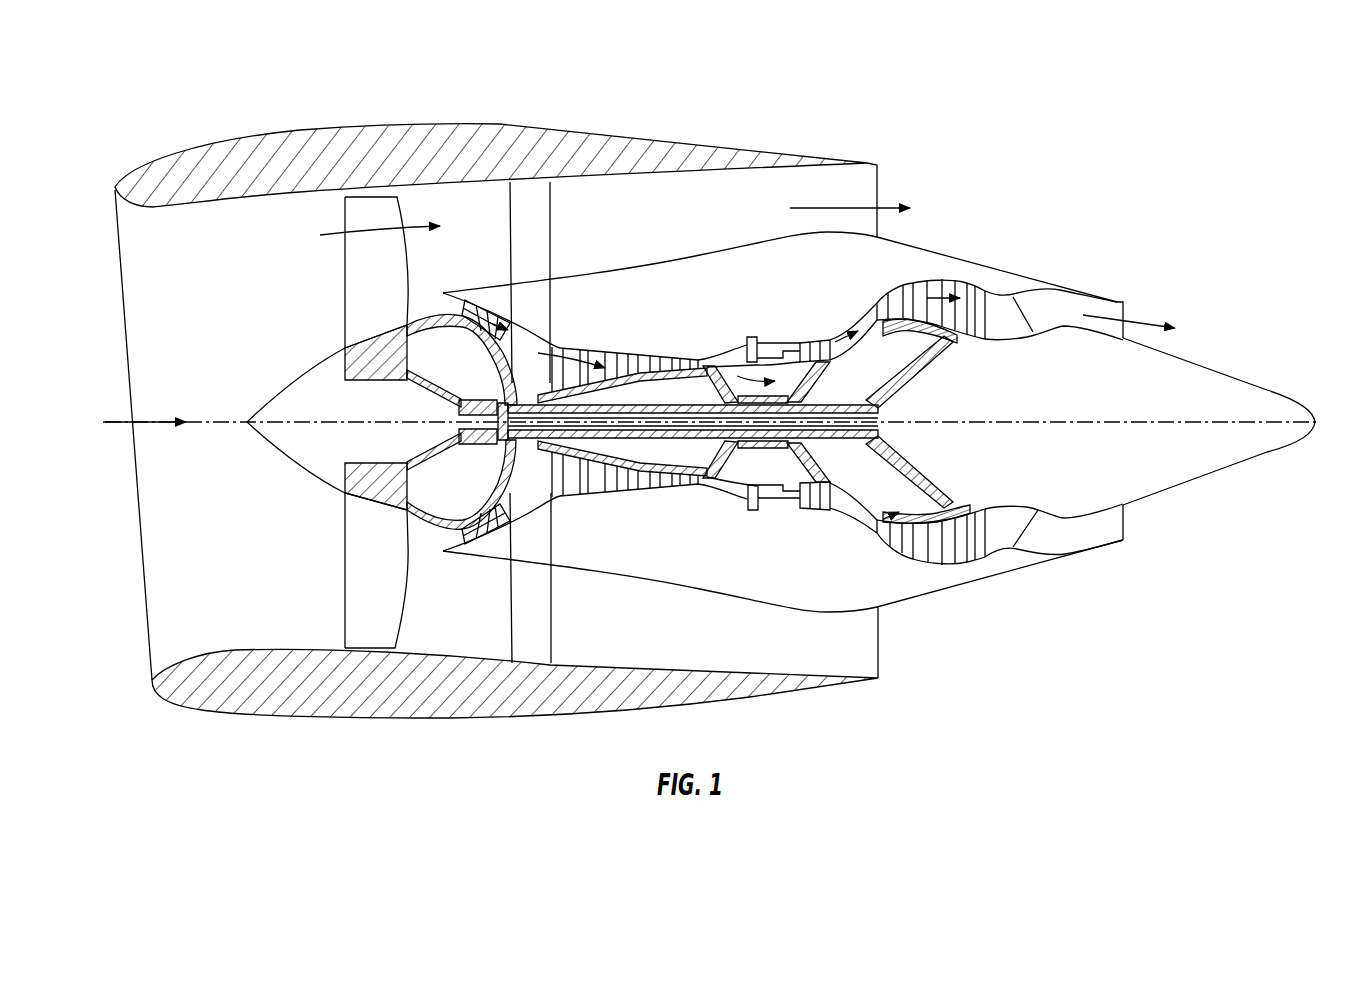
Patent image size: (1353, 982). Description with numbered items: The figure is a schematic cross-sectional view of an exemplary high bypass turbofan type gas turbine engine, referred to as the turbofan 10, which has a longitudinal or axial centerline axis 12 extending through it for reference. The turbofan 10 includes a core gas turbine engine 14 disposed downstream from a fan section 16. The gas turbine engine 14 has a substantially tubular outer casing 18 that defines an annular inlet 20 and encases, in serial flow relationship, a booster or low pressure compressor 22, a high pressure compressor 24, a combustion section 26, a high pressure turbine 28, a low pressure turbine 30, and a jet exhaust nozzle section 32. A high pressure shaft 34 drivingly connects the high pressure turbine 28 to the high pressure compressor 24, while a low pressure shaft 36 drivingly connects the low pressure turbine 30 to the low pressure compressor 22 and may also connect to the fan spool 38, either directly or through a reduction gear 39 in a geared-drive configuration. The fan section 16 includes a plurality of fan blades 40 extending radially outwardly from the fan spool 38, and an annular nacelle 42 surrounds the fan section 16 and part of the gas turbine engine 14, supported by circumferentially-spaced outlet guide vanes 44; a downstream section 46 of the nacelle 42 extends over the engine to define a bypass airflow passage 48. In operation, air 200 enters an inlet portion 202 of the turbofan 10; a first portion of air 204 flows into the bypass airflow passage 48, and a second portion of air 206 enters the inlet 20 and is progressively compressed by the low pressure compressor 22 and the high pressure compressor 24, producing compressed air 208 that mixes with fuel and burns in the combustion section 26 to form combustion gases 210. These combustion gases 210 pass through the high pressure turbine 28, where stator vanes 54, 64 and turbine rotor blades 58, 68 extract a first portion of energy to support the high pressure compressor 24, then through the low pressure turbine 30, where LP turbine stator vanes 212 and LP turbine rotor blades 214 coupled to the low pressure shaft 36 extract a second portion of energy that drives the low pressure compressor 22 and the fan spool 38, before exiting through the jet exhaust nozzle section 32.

The turbofan 10 is at (1033, 140).
The centerline axis 12 is at (1057, 420).
The gas turbine engine 14 is at (729, 301).
The fan section 16 is at (399, 112).
The outer casing 18 is at (727, 601).
The annular inlet 20 is at (445, 537).
The low pressure compressor 22 is at (511, 510).
The high pressure compressor 24 is at (582, 492).
The combustion section 26 is at (767, 499).
The high pressure turbine 28 is at (831, 494).
The low pressure turbine 30 is at (969, 562).
The jet exhaust nozzle section 32 is at (1128, 311).
The high pressure shaft 34 is at (818, 379).
The low pressure shaft 36 is at (514, 400).
The fan spool 38 is at (400, 382).
The reduction gear 39 is at (502, 441).
The fan blades 40 is at (346, 585).
The nacelle 42 is at (392, 718).
The outlet guide vanes 44 is at (553, 216).
The downstream section 46 is at (778, 147).
The bypass airflow passage 48 is at (685, 231).
The stator vanes 54 is at (790, 500).
The turbine rotor blades 58 is at (805, 500).
The stator vanes 64 is at (820, 500).
The turbine rotor blades 68 is at (826, 508).
The air 200 is at (140, 420).
The inlet portion 202 is at (150, 668).
The first portion of air 204 is at (352, 229).
The second portion of air 206 is at (433, 306).
The compressed air 208 is at (745, 341).
The combustion gases 210 is at (812, 338).
The LP turbine stator vanes 212 is at (881, 303).
The LP turbine rotor blades 214 is at (889, 293).